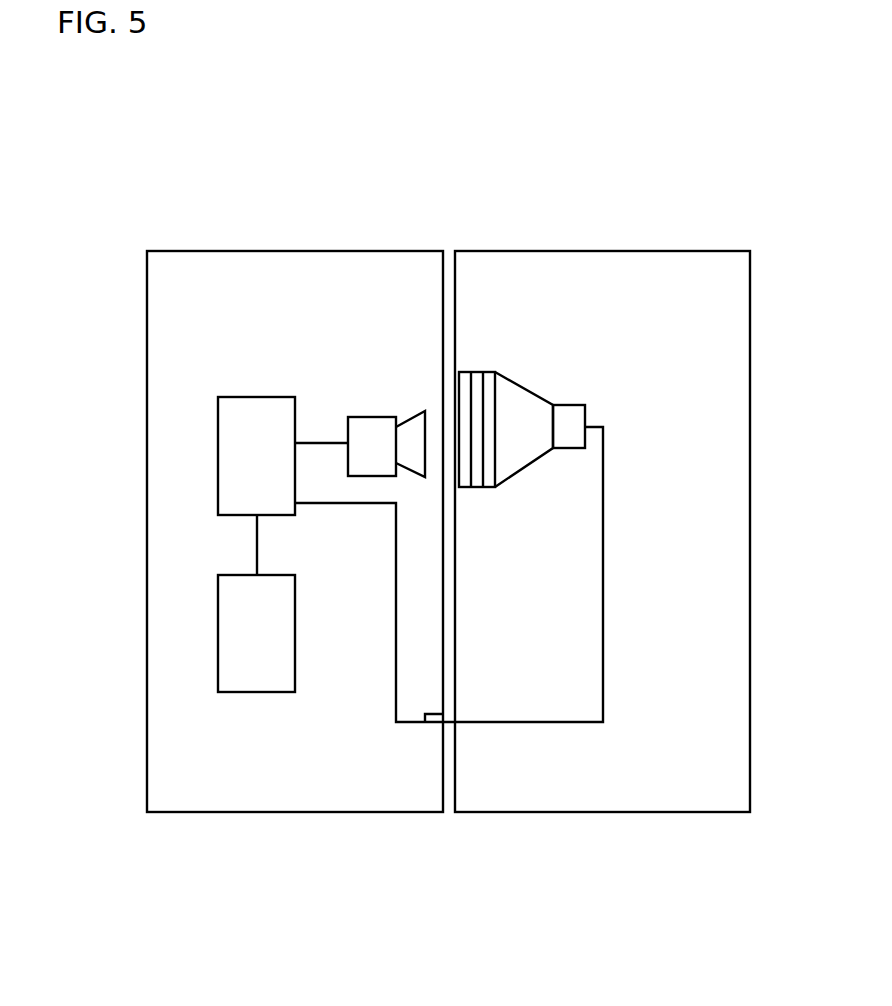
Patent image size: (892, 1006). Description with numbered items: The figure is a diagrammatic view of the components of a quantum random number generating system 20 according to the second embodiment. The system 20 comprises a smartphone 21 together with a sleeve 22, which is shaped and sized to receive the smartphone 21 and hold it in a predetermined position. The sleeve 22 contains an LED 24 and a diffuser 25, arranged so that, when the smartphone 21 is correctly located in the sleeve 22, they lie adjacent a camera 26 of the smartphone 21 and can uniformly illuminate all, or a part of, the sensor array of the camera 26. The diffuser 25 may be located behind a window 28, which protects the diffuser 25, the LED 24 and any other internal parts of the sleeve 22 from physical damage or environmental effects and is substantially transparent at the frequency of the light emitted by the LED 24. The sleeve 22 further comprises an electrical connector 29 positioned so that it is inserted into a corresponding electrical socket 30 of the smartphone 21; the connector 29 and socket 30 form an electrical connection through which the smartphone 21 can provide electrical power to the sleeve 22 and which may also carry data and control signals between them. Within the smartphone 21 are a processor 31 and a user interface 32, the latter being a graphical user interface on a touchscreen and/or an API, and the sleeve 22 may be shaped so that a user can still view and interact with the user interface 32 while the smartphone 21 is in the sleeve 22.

The quantum random number generating system 20 is at (109, 186).
The smartphone 21 is at (189, 812).
The sleeve 22 is at (717, 812).
The LED 24 is at (563, 405).
The diffuser 25 is at (492, 372).
The camera 26 is at (370, 417).
The window 28 is at (465, 372).
The electrical connector 29 is at (455, 722).
The electrical socket 30 is at (430, 722).
The processor 31 is at (218, 429).
The user interface 32 is at (218, 606).